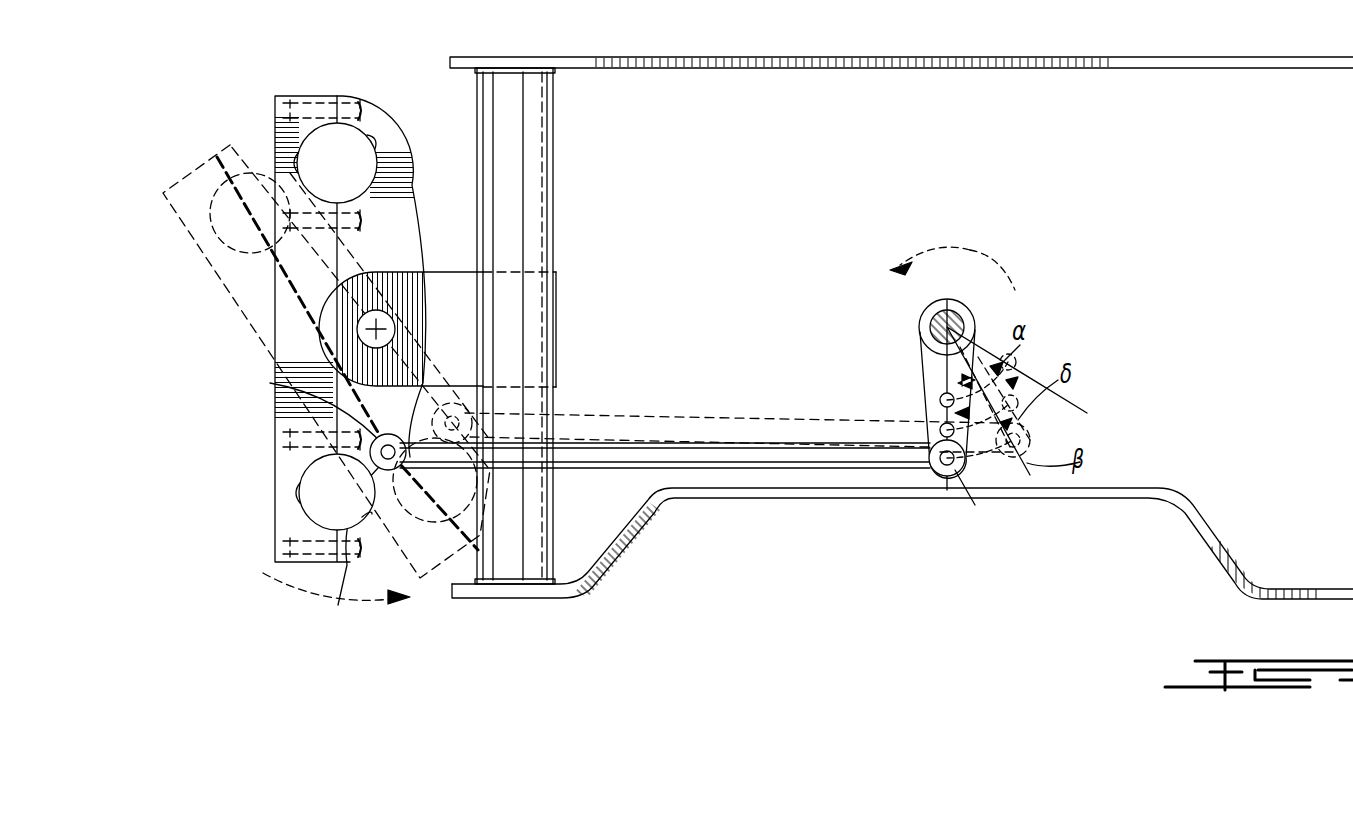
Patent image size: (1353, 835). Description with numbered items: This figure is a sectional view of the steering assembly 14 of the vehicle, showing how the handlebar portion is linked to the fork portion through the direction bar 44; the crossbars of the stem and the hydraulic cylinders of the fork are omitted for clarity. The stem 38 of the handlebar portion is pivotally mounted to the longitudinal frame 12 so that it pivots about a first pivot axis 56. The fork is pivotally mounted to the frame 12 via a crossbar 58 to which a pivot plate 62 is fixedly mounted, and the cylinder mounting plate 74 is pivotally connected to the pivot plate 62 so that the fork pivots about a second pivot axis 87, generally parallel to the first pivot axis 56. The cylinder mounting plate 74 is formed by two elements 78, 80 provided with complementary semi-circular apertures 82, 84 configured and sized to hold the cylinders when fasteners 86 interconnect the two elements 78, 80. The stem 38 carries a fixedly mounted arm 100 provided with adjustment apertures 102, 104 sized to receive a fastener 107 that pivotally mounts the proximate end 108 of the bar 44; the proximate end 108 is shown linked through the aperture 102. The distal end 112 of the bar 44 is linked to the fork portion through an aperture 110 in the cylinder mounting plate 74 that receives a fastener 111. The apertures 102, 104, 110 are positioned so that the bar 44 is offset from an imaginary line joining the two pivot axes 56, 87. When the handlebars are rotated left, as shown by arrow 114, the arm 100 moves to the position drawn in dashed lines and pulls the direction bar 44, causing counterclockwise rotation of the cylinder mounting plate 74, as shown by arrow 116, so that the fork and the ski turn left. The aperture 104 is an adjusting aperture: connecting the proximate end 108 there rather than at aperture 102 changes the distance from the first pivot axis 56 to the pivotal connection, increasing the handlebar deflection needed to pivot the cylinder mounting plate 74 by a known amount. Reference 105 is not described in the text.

The longitudinal frame 12 is at (1235, 68).
The steering assembly 14 is at (463, 671).
The stem 38 is at (940, 318).
The direction bar 44 is at (768, 455).
The first pivot axis 56 is at (975, 322).
The crossbar 58 is at (512, 131).
The pivot plate 62 is at (440, 270).
The cylinder mounting plate 74 is at (412, 191).
The element 78 is at (384, 160).
The element 80 is at (300, 260).
The semi-circular aperture 82 is at (345, 128).
The semi-circular aperture 84 is at (298, 158).
The fastener 86 is at (280, 103).
The second pivot axis 87 is at (395, 330).
The arm 100 is at (925, 372).
The adjustment aperture 102 is at (940, 472).
The adjustment aperture 104 is at (1010, 470).
The adjustment holes 105 is at (940, 400).
The fastener 107 is at (960, 478).
The proximate end 108 is at (924, 472).
The aperture 110 is at (408, 468).
The fastener 111 is at (300, 385).
The distal end 112 is at (418, 466).
The arrow 114 is at (970, 250).
The arrow 116 is at (320, 592).